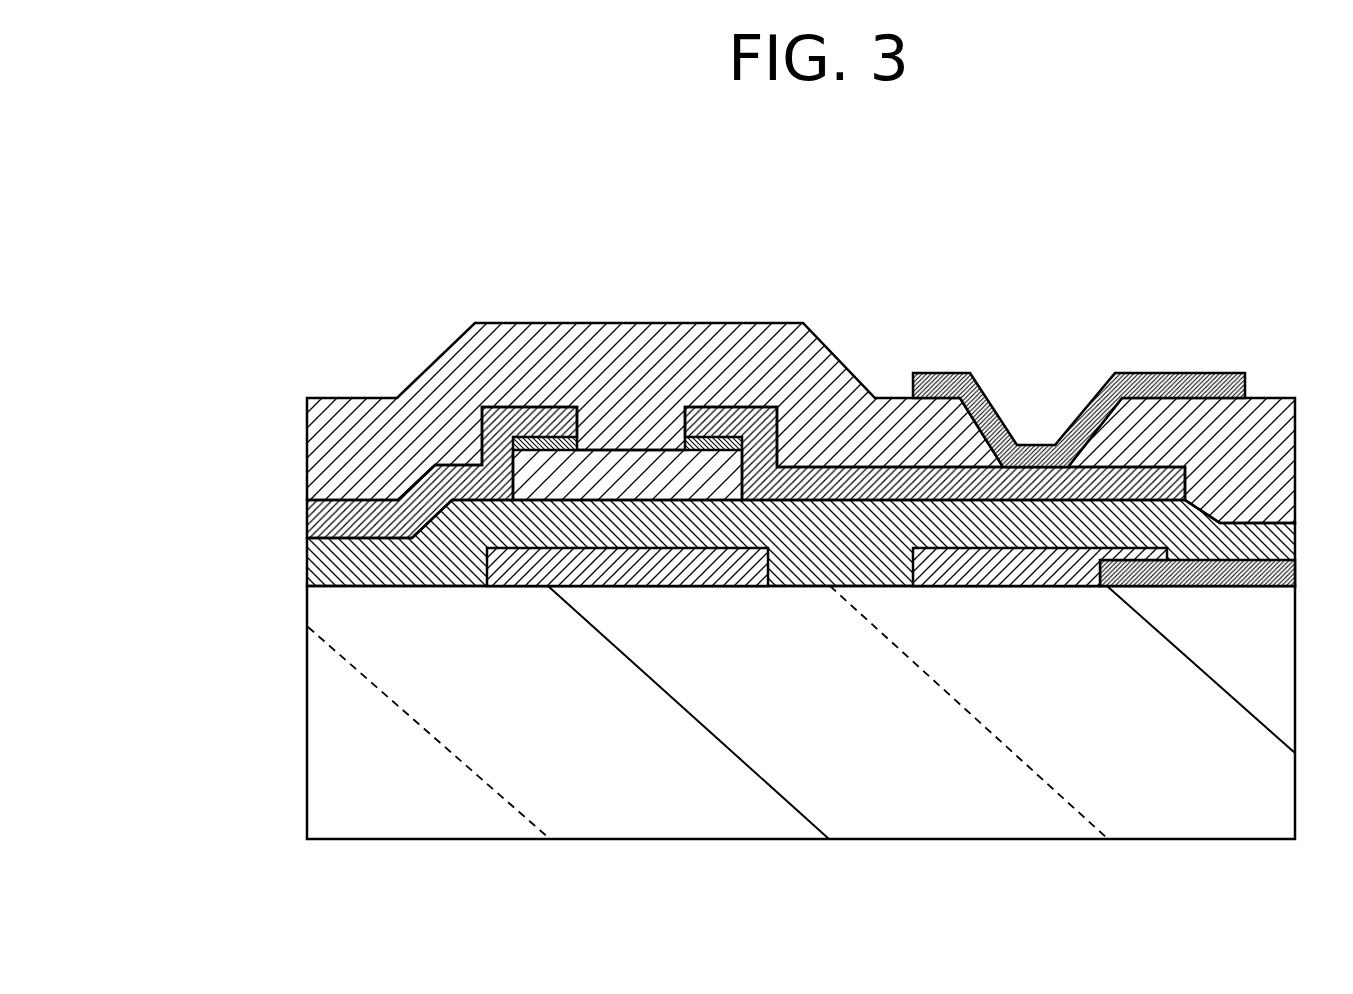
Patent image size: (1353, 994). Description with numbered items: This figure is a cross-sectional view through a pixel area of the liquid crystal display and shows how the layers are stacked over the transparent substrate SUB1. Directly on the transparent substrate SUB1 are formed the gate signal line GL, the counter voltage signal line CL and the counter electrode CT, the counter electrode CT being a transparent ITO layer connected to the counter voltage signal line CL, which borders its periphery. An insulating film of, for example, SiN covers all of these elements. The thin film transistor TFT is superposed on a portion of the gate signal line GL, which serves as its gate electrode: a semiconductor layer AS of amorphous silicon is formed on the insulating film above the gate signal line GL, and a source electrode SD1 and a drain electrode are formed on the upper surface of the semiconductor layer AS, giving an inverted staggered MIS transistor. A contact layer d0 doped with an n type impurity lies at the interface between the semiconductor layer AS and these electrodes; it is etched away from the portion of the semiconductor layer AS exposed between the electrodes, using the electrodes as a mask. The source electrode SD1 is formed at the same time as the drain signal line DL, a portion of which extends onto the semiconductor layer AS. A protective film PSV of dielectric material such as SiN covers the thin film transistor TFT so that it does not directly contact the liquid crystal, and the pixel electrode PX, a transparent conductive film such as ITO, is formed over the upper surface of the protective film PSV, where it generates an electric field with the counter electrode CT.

The thin film transistor TFT is at (849, 340).
The protective film PSV is at (567, 382).
The drain signal line DL is at (420, 502).
The semiconductor layer AS is at (635, 470).
The contact layer d0 is at (732, 432).
The source electrode SD1 is at (960, 373).
The pixel electrode PX is at (1188, 373).
The gate signal line GL is at (670, 588).
The counter voltage signal line CL is at (963, 588).
The counter electrode CT is at (1145, 588).
The transparent substrate SUB1 is at (608, 823).